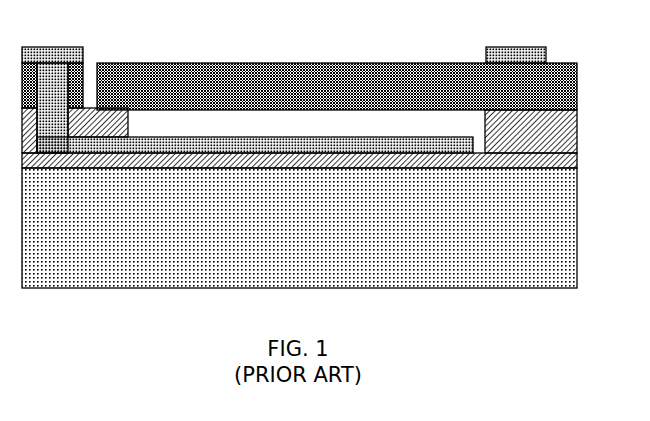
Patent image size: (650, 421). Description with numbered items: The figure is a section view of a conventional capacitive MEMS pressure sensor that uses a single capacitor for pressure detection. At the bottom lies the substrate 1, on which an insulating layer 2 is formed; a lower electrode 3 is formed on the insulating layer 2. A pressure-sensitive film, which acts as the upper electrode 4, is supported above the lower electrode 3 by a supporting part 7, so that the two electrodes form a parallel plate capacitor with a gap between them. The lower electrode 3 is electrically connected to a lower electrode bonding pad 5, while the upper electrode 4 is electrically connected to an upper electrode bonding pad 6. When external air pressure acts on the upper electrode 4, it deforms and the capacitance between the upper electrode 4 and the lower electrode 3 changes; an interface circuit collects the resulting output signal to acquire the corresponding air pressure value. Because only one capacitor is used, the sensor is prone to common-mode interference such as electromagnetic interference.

The substrate 1 is at (356, 264).
The insulating layer 2 is at (476, 170).
The lower electrode 3 is at (258, 125).
The upper electrode 4 is at (393, 63).
The lower electrode bonding pad 5 is at (60, 46).
The upper electrode bonding pad 6 is at (523, 44).
The supporting part 7 is at (89, 104).